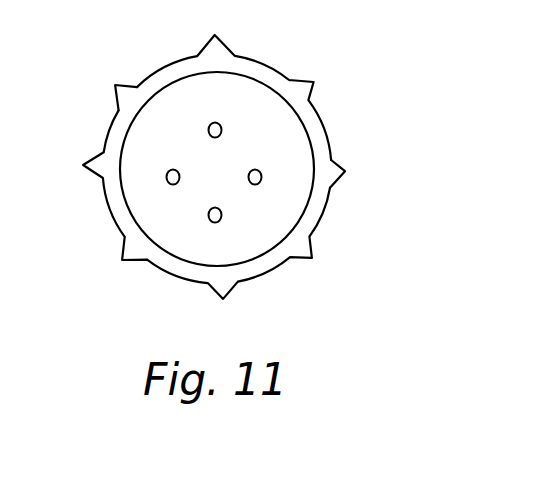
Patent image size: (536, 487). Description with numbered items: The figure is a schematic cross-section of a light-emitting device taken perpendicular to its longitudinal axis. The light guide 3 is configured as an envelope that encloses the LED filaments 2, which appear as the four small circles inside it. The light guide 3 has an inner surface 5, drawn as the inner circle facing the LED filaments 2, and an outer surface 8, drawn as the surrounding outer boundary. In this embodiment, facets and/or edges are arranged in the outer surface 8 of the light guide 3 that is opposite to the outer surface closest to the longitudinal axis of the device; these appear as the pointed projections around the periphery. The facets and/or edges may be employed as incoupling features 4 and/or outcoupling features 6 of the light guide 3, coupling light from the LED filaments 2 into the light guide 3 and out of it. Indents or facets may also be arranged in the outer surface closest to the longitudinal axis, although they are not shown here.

The LED filament 2 is at (261, 178).
The light guide 3 is at (313, 120).
The incoupling feature 4 is at (338, 162).
The inner surface 5 is at (188, 265).
The outcoupling feature 6 is at (340, 180).
The outer surface 8 is at (108, 124).